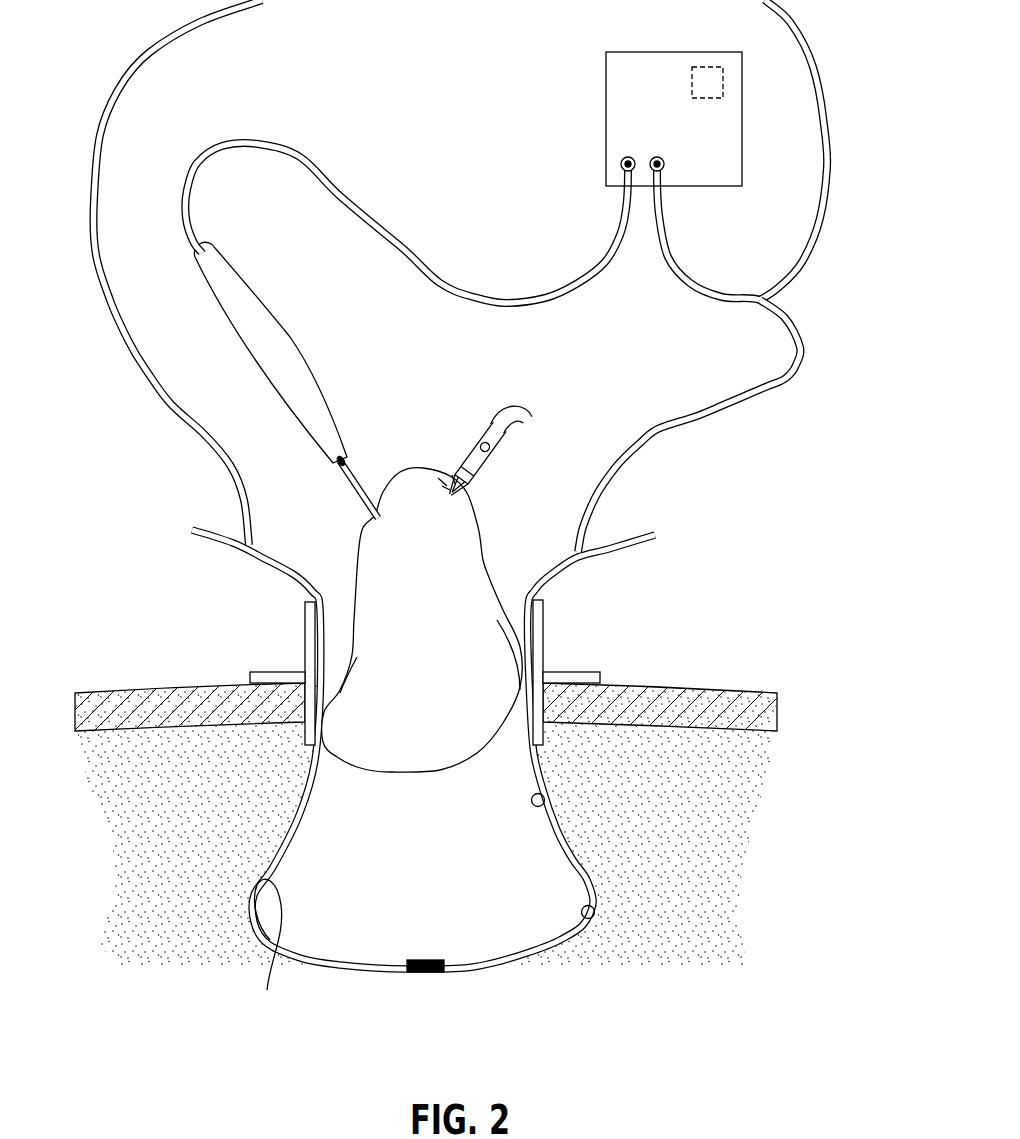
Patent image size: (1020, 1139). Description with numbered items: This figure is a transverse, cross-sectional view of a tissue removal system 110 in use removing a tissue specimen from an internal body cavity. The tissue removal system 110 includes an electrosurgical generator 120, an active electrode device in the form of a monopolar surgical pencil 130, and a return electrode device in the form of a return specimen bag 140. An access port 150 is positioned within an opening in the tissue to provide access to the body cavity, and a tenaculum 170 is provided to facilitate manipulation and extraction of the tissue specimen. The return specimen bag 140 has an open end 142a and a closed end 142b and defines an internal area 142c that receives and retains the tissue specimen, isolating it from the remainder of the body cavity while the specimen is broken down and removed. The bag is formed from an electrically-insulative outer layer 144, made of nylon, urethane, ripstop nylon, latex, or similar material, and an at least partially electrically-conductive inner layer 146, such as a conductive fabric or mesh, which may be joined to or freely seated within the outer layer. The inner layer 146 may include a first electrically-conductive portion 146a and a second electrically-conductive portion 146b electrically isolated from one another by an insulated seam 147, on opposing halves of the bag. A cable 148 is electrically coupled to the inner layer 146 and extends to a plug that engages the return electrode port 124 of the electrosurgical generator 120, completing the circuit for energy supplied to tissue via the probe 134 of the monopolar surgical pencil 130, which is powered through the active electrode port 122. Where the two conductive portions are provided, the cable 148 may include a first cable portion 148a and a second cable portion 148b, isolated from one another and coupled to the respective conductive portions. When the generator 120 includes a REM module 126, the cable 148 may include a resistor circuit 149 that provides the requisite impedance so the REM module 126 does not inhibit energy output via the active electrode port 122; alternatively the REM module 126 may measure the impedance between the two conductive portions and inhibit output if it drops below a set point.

The tissue removal system 110 is at (398, 59).
The electrosurgical generator 120 is at (709, 97).
The active electrode port 122 is at (625, 158).
The return electrode port 124 is at (663, 168).
The REM module 126 is at (725, 82).
The monopolar surgical pencil 130 is at (296, 380).
The probe 134 is at (360, 477).
The return specimen bag 140 is at (518, 766).
The open end 142a is at (640, 530).
The closed end 142b is at (513, 960).
The internal area 142c is at (503, 893).
The electrically-insulative outer layer 144 is at (568, 855).
The electrically-conductive inner layer 146 is at (594, 921).
The first electrically-conductive portion 146a is at (548, 796).
The second electrically-conductive portion 146b is at (268, 952).
The insulated seam 147 is at (418, 975).
The cable 148 is at (829, 165).
The first cable portion 148a is at (803, 345).
The second cable portion 148b is at (110, 305).
The resistor circuit 149 is at (695, 295).
The access port 150 is at (305, 633).
The tenaculum 170 is at (473, 422).